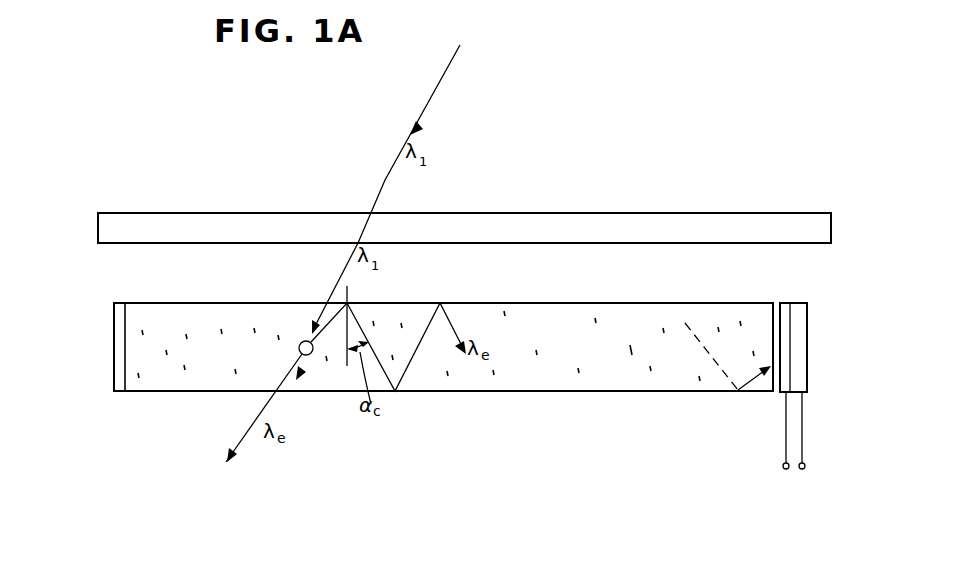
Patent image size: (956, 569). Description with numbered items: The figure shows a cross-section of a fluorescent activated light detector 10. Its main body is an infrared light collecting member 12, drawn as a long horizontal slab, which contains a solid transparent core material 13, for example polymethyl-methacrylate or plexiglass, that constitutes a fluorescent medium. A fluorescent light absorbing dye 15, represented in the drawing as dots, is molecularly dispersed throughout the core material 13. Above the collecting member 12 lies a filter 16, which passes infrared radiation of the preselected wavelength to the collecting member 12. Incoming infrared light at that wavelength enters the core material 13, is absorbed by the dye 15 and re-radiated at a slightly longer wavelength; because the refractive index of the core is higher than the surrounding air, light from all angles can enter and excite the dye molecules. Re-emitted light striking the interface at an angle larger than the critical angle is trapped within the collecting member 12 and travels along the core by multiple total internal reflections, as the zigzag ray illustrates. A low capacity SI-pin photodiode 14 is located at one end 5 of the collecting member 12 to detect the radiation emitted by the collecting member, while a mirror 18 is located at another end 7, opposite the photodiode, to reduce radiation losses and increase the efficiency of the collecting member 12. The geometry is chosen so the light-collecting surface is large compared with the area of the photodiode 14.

The end of the collecting member 5 is at (776, 303).
The another end of the collecting member 7 is at (150, 303).
The fluorescent activated light detector 10 is at (411, 433).
The infrared light collecting member 12 is at (524, 400).
The solid transparent core material 13 is at (605, 393).
The SI-pin photodiode 14 is at (808, 318).
The fluorescent light absorbing dye 15 is at (666, 378).
The filter 16 is at (633, 221).
The mirror 18 is at (114, 376).